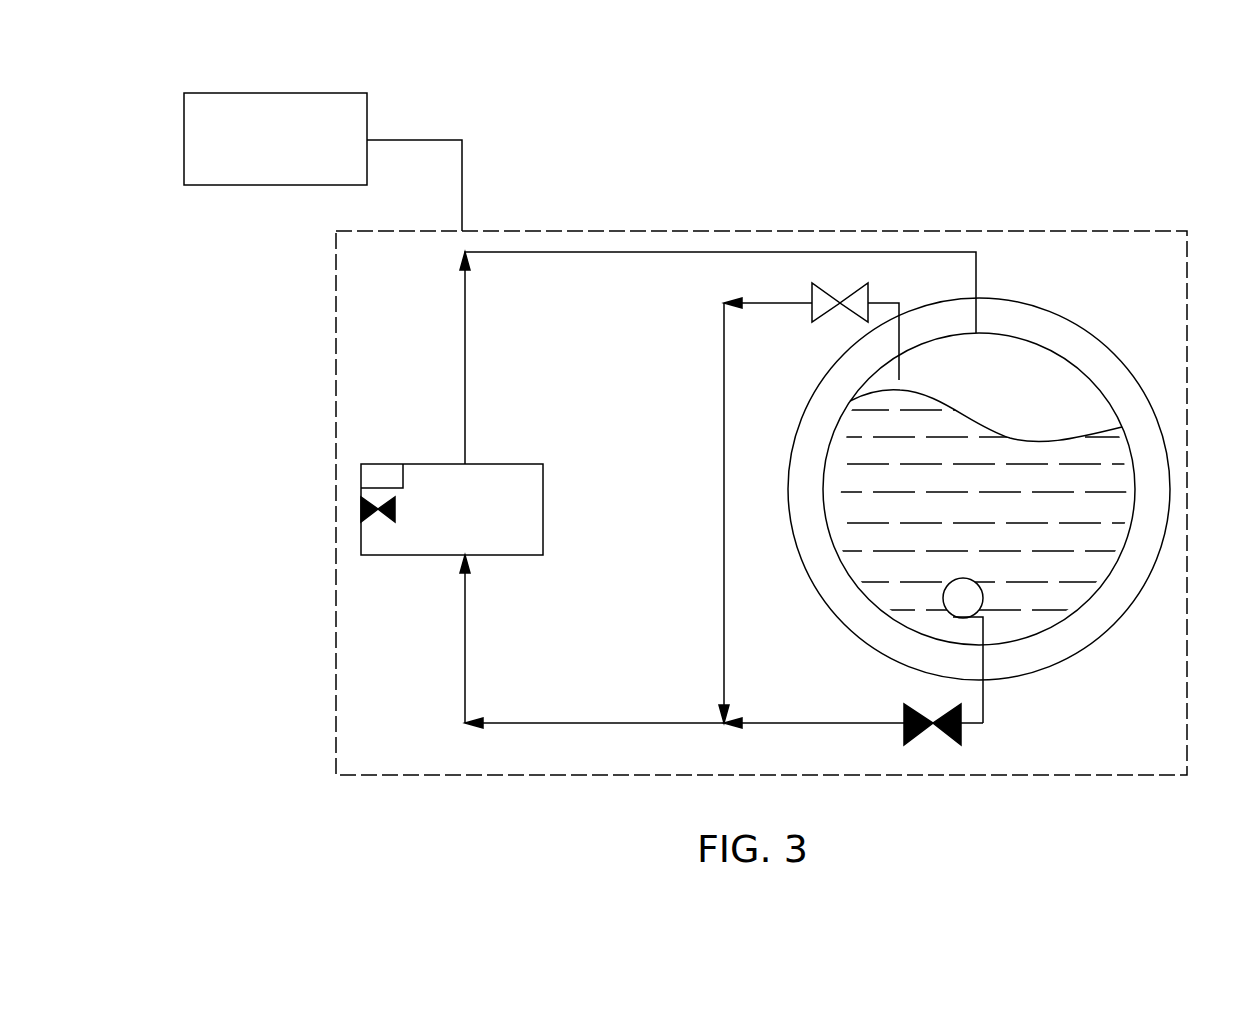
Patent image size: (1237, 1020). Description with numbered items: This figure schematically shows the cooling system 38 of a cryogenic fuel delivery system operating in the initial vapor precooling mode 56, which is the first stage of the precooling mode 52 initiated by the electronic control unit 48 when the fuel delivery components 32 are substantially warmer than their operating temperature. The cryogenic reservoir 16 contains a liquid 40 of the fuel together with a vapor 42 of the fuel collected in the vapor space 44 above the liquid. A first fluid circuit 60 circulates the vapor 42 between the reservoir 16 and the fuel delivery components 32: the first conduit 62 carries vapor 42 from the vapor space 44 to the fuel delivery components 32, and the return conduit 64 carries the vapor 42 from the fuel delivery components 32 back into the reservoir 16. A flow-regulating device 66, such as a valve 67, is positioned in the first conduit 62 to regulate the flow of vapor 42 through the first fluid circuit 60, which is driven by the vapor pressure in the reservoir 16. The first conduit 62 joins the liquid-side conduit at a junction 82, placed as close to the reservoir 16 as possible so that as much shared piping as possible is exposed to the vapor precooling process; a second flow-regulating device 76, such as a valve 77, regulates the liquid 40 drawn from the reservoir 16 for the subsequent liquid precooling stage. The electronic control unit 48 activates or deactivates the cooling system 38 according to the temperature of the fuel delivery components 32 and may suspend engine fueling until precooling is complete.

The cryogenic reservoir 16 is at (1072, 320).
The first set of cryogenic fuel delivery components 32 is at (412, 464).
The cooling system 38 is at (895, 231).
The liquid 40 is at (1095, 538).
The vapor 42 is at (1078, 392).
The vapor space 44 is at (1008, 352).
The electronic control unit 48 is at (276, 93).
The precooling mode 52 is at (960, 68).
The initial vapor precooling mode 56 is at (960, 118).
The first fluid circuit 60 is at (437, 343).
The first conduit 62 is at (724, 468).
The return conduit 64 is at (567, 252).
The flow-regulating device 66 is at (850, 294).
The valve 67 is at (827, 294).
The flow-regulating device 76 is at (961, 736).
The valve 77 is at (917, 737).
The junction 82 is at (724, 728).